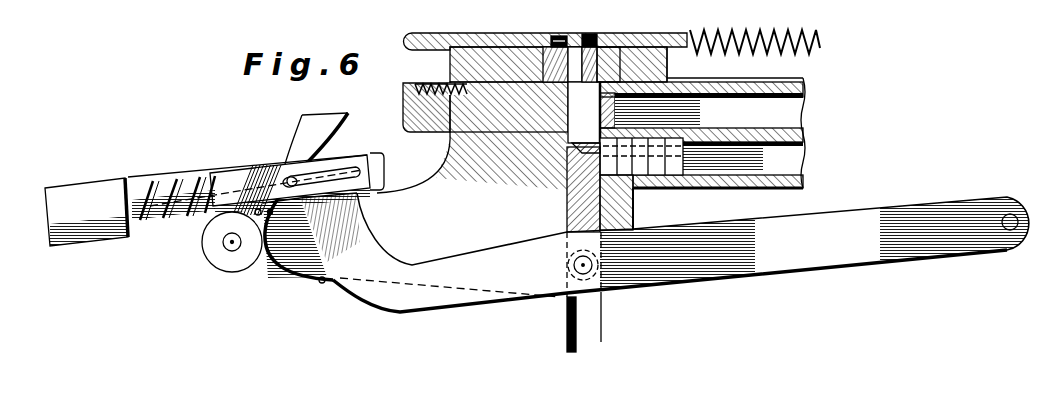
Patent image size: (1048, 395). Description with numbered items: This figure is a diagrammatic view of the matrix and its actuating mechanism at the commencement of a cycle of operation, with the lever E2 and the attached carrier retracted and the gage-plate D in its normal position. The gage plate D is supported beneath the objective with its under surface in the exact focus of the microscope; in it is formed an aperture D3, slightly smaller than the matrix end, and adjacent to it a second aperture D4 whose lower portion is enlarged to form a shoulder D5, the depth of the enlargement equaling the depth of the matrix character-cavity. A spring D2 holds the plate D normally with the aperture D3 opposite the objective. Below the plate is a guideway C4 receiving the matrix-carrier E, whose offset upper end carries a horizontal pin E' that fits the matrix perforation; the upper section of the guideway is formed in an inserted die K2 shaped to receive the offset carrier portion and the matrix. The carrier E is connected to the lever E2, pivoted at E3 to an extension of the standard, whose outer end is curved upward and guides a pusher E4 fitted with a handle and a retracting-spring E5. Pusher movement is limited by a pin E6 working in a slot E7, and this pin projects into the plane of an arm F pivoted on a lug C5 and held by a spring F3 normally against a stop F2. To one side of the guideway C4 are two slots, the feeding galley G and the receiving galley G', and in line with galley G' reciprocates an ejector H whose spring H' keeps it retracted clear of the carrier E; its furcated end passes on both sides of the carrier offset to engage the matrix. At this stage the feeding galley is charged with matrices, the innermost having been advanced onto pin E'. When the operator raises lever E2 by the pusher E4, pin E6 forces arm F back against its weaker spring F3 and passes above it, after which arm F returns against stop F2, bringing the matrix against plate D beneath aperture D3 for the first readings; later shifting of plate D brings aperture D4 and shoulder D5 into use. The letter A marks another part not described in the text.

The gage plate D is at (418, 33).
The inserted die K2 is at (547, 75).
The shoulder D5 is at (561, 29).
The second aperture D4 is at (590, 34).
The aperture D3 is at (615, 47).
The spring D2 is at (755, 29).
The spring H' is at (440, 76).
The ejector H is at (413, 108).
The arm F is at (321, 120).
The pin E6 is at (283, 177).
The slot E7 is at (342, 173).
The retracting-spring E5 is at (124, 236).
The pusher E4 is at (175, 215).
The stop F2 is at (263, 217).
The lug C5 is at (288, 268).
The spring F3 is at (316, 282).
The guideway C4 is at (553, 140).
The horizontal pin E' is at (577, 202).
The matrix-carrier E is at (566, 192).
The frame A is at (607, 175).
The lever E2 is at (686, 271).
The pivot E3 is at (1005, 214).
The receiving galley G' is at (701, 103).
The feeding galley G is at (702, 133).